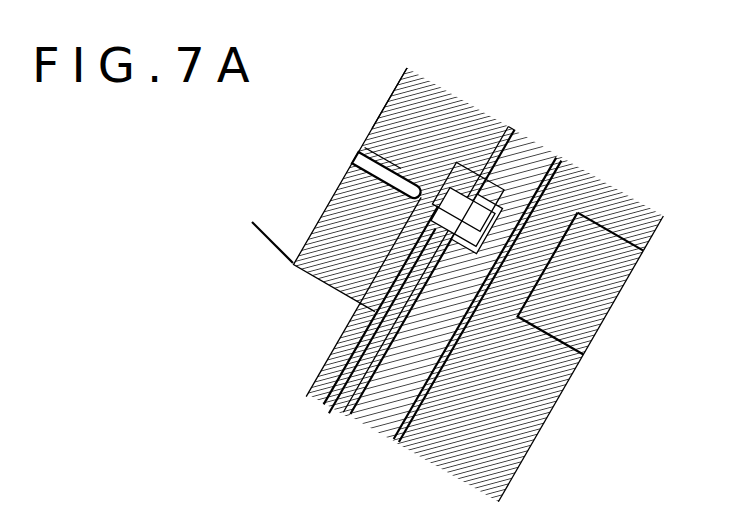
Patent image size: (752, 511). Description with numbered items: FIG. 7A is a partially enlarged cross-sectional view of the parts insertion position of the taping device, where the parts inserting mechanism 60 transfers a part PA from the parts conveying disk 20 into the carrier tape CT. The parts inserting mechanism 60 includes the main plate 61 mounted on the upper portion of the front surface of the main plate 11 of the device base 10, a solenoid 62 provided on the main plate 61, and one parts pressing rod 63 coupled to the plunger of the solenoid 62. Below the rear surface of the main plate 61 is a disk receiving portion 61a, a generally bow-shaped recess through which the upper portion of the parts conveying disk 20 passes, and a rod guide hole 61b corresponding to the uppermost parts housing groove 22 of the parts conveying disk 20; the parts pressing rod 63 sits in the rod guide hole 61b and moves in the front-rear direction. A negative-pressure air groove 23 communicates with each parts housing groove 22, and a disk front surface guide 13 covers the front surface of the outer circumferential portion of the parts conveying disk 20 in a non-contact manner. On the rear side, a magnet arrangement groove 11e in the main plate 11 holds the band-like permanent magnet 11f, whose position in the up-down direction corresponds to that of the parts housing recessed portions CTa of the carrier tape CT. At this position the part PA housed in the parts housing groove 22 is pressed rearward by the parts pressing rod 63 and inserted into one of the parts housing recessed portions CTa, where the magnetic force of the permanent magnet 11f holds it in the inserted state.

The parts inserting mechanism 60 is at (431, 77).
The main plate 61 is at (406, 87).
The disk receiving portion 61a is at (387, 283).
The rod guide hole 61b is at (387, 157).
The solenoid 62 is at (272, 233).
The parts pressing rod 63 is at (363, 158).
The disk front surface guide 13 is at (318, 374).
The parts conveying disk 20 is at (329, 411).
The parts housing groove 22 is at (463, 160).
The negative-pressure air groove 23 is at (360, 392).
The part PA is at (417, 204).
The carrier tape CT is at (522, 145).
The parts housing recessed portion CTa is at (493, 194).
The main plate 11 is at (603, 187).
The device base 10 is at (628, 193).
The magnet arrangement groove 11e is at (633, 240).
The permanent magnet 11f is at (605, 302).